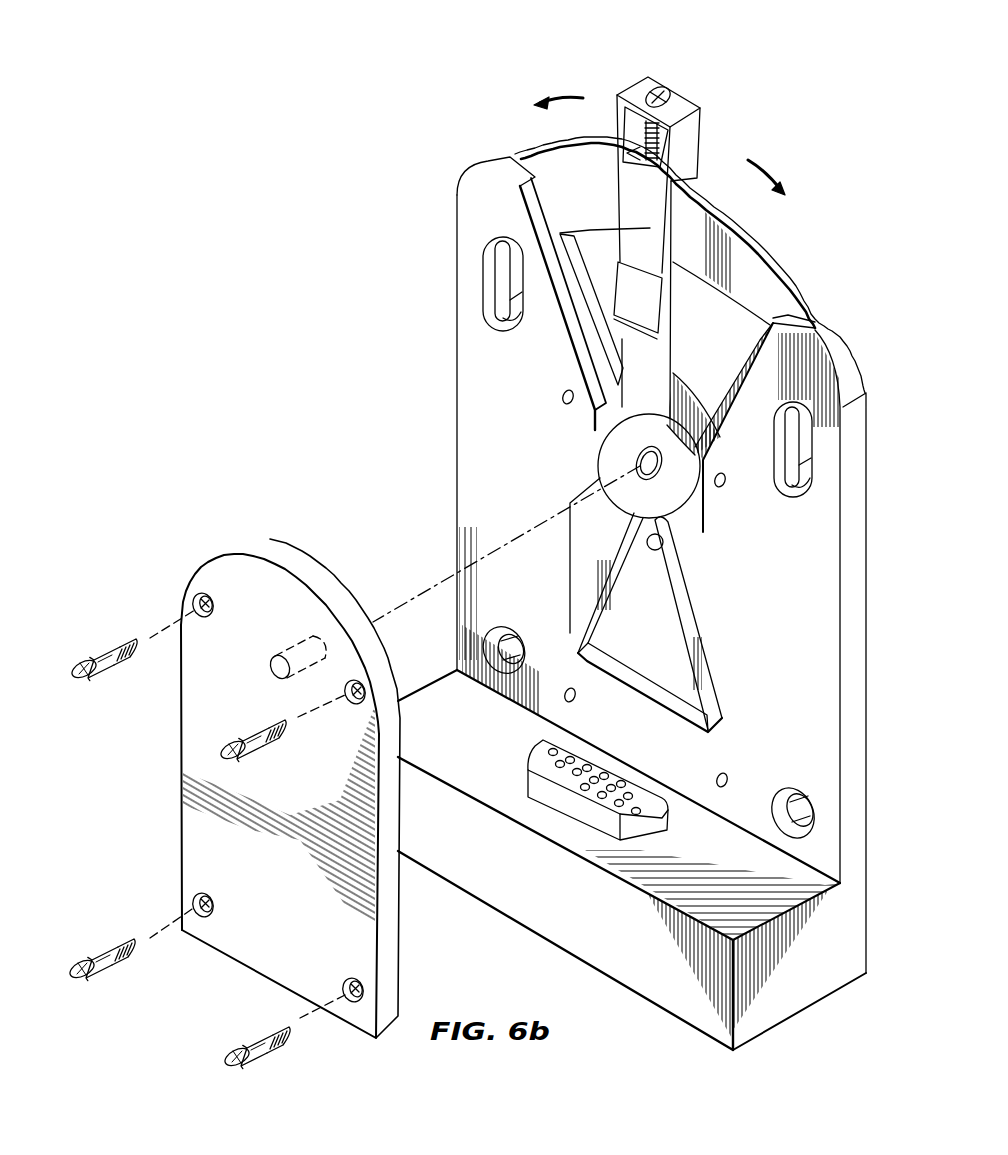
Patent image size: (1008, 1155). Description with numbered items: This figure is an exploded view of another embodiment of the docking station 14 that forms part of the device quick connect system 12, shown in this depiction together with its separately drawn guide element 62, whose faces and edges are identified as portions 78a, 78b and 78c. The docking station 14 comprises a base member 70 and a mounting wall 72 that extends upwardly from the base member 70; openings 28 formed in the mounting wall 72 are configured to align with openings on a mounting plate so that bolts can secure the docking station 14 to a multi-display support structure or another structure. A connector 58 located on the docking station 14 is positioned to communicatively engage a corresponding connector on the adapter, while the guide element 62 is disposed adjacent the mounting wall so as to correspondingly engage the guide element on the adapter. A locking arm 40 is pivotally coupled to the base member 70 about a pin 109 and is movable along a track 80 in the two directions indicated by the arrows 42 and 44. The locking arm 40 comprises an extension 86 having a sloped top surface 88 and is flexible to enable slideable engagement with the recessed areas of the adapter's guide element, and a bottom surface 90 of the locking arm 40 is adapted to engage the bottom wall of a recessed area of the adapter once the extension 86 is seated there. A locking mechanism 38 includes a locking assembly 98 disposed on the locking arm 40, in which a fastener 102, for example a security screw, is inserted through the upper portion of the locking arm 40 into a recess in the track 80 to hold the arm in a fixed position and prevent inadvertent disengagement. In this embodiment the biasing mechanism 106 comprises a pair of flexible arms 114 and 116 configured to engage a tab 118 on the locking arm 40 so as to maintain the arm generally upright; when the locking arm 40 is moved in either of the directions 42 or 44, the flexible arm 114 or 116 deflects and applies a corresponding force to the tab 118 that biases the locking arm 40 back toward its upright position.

The housing 12 is at (318, 366).
The docking station 14 is at (672, 1022).
The openings 28 is at (512, 328).
The locking mechanism 38 is at (706, 84).
The locking arm 40 is at (690, 128).
The direction arrow 42 is at (752, 160).
The direction arrow 44 is at (565, 93).
The connector 58 is at (597, 770).
The guide element 62 is at (263, 769).
The base member 70 is at (805, 985).
The mounting wall 72 is at (858, 503).
The bracket left edge 78a is at (181, 880).
The bracket side face 78b is at (397, 925).
The bracket arcuate top 78c is at (325, 598).
The track 80 is at (810, 283).
The extension 86 is at (672, 325).
The sloped top surface 88 is at (628, 309).
The bottom surface 90 is at (630, 333).
The locking assembly 98 is at (646, 142).
The fastener 102 is at (660, 88).
The biasing mechanism 106 is at (640, 598).
The pin 109 is at (638, 465).
The flexible arm 114 is at (614, 560).
The flexible arm 116 is at (698, 605).
The tab 118 is at (664, 546).